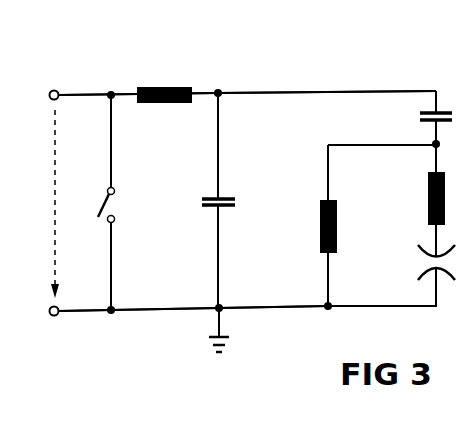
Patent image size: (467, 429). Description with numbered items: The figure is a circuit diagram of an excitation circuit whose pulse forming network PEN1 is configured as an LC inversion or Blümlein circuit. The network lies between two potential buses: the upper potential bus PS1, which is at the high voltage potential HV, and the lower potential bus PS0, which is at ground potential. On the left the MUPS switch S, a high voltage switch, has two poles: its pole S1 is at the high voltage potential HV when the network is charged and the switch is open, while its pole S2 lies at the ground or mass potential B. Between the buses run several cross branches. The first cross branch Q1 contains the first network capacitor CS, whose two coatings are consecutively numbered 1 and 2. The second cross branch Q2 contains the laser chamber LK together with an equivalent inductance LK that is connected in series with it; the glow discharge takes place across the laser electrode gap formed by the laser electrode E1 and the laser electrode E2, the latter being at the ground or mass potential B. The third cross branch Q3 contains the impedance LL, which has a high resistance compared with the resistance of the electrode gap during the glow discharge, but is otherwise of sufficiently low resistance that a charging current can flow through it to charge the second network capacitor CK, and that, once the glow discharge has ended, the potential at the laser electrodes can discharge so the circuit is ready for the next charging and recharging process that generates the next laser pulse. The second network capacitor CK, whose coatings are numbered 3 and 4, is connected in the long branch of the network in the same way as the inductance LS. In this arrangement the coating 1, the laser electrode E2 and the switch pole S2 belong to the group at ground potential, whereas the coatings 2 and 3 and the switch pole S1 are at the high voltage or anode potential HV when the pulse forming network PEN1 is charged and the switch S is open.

The high voltage potential HV is at (50, 204).
The MUPS switch S is at (100, 211).
The pole of the MUPS switch S1 is at (114, 190).
The pole of the MUPS switch S2 is at (115, 218).
The inductance LS is at (154, 86).
The first network capacitor CS is at (200, 199).
The coating 1 is at (236, 206).
The coating 2 is at (247, 184).
The first cross branch Q1 is at (228, 138).
The pulse forming network PEN1 is at (282, 28).
The potential bus PS1 is at (263, 91).
The potential bus PS0 is at (246, 312).
The ground or mass potential B is at (203, 337).
The second network capacitor CK is at (418, 118).
The coating 3 is at (444, 112).
The coating 4 is at (441, 122).
The second cross branch Q2 is at (433, 157).
The third cross branch Q3 is at (331, 181).
The impedance LL is at (320, 224).
The laser chamber LK is at (428, 206).
The laser electrode E1 is at (420, 254).
The laser electrode E2 is at (421, 273).